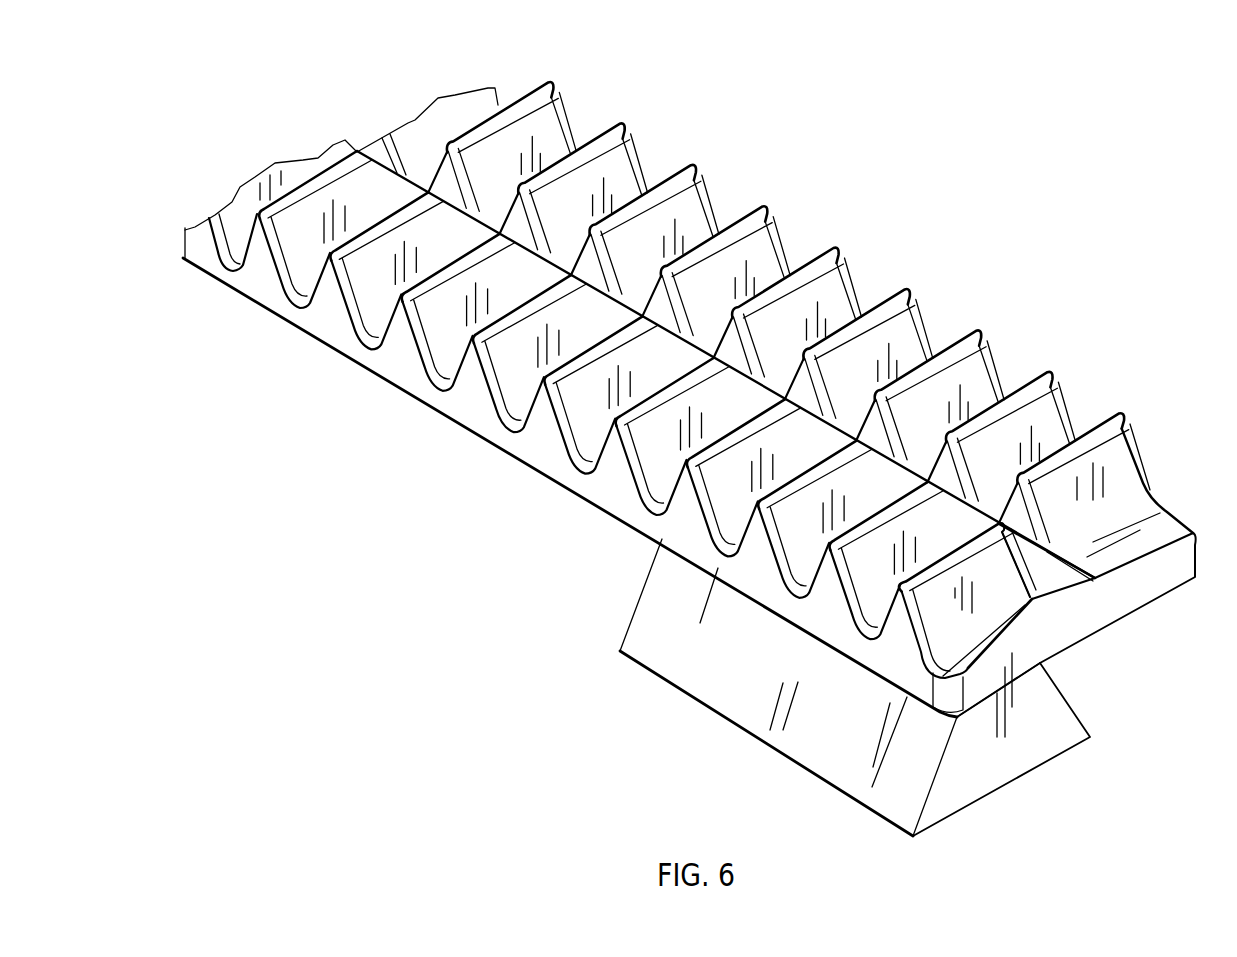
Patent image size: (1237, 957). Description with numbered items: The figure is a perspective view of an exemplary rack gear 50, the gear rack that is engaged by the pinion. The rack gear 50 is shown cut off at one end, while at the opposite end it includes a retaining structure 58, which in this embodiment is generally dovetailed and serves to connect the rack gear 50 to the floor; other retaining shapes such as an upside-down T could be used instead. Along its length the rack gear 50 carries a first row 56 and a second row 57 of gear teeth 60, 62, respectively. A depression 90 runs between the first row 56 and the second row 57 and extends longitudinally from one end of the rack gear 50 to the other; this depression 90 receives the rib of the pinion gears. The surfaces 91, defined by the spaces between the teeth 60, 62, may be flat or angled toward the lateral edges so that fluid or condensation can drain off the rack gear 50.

The rack gear 50 is at (706, 432).
The first row 56 is at (701, 353).
The second row 57 is at (482, 460).
The retaining structure 58 is at (727, 746).
The gear teeth 60 is at (663, 213).
The gear teeth 62 is at (310, 228).
The depression 90 is at (1055, 575).
The surfaces 91 is at (795, 583).